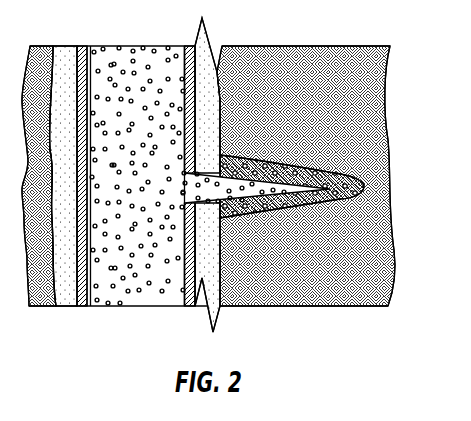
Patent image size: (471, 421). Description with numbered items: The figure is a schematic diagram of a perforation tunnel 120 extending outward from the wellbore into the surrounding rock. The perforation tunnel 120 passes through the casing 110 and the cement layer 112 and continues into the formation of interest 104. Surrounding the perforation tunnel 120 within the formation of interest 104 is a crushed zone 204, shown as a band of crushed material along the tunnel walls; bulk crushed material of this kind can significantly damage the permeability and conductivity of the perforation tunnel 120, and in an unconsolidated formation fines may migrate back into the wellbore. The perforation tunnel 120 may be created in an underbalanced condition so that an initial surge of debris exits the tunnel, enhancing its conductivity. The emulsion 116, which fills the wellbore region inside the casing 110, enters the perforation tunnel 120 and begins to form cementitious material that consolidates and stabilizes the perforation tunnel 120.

The formation of interest 104 is at (322, 271).
The casing 110 is at (192, 282).
The cement layer 112 is at (213, 282).
The emulsion 116 is at (147, 63).
The perforation tunnel 120 is at (311, 171).
The crushed zone 204 is at (362, 192).